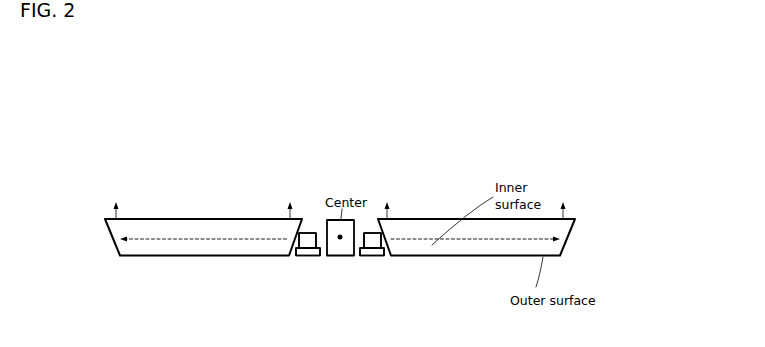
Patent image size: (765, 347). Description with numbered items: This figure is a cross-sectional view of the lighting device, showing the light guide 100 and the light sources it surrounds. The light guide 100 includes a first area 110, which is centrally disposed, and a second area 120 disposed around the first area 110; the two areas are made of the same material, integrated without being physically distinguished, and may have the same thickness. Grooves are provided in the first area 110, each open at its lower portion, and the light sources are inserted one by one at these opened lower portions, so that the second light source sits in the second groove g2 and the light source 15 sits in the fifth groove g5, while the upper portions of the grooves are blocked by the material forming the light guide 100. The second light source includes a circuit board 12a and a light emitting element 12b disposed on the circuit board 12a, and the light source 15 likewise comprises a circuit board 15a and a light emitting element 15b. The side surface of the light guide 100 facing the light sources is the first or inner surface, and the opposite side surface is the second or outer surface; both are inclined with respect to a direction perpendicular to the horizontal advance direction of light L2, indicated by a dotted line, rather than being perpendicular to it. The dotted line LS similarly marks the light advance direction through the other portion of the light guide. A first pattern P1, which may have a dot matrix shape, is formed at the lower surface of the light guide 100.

The light guide 100 is at (536, 156).
The first area 110 is at (402, 217).
The second area 120 is at (455, 217).
The light source 15 is at (310, 268).
The circuit board 15a is at (299, 257).
The light emitting element 15b is at (298, 251).
The circuit board 12a is at (382, 257).
The light emitting element 12b is at (383, 251).
The fifth groove g5 is at (322, 257).
The second groove g2 is at (358, 257).
The first pattern P1 is at (202, 271).
The left lens LS is at (203, 237).
The horizontal advance direction of light L2 is at (476, 237).